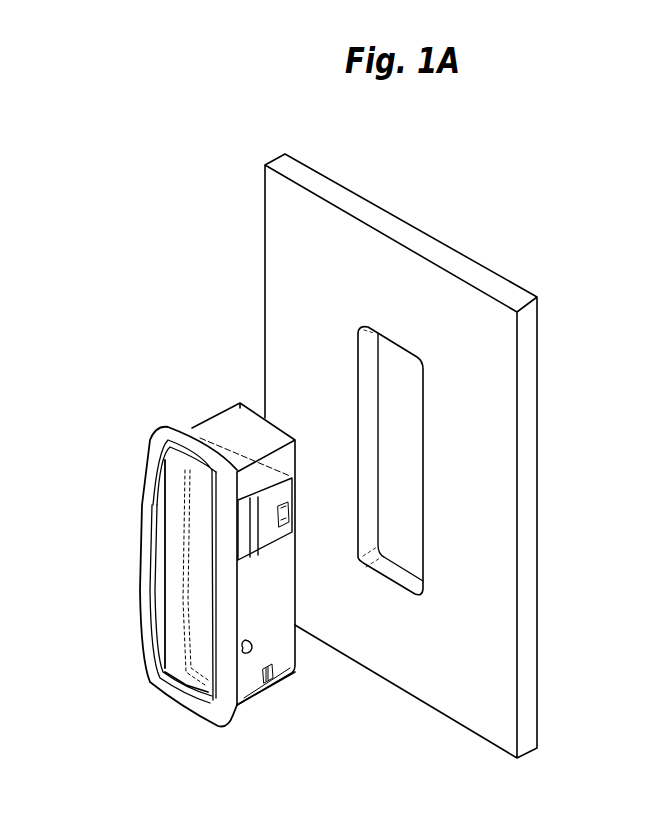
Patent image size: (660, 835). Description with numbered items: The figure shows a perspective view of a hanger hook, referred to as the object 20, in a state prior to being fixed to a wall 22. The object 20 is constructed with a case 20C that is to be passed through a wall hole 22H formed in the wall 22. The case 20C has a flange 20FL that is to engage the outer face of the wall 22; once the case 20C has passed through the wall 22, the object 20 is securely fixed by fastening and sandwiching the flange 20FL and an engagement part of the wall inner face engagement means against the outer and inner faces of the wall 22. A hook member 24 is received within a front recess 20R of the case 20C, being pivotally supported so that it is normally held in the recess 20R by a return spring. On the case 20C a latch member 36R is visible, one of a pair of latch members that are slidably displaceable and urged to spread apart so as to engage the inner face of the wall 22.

The object 20 is at (208, 541).
The case 20C is at (270, 630).
The front recess 20R is at (165, 557).
The flange 20FL is at (232, 672).
The wall 22 is at (495, 437).
The wall hole 22H is at (405, 480).
The hook member 24 is at (176, 632).
The latch member 36R is at (275, 537).